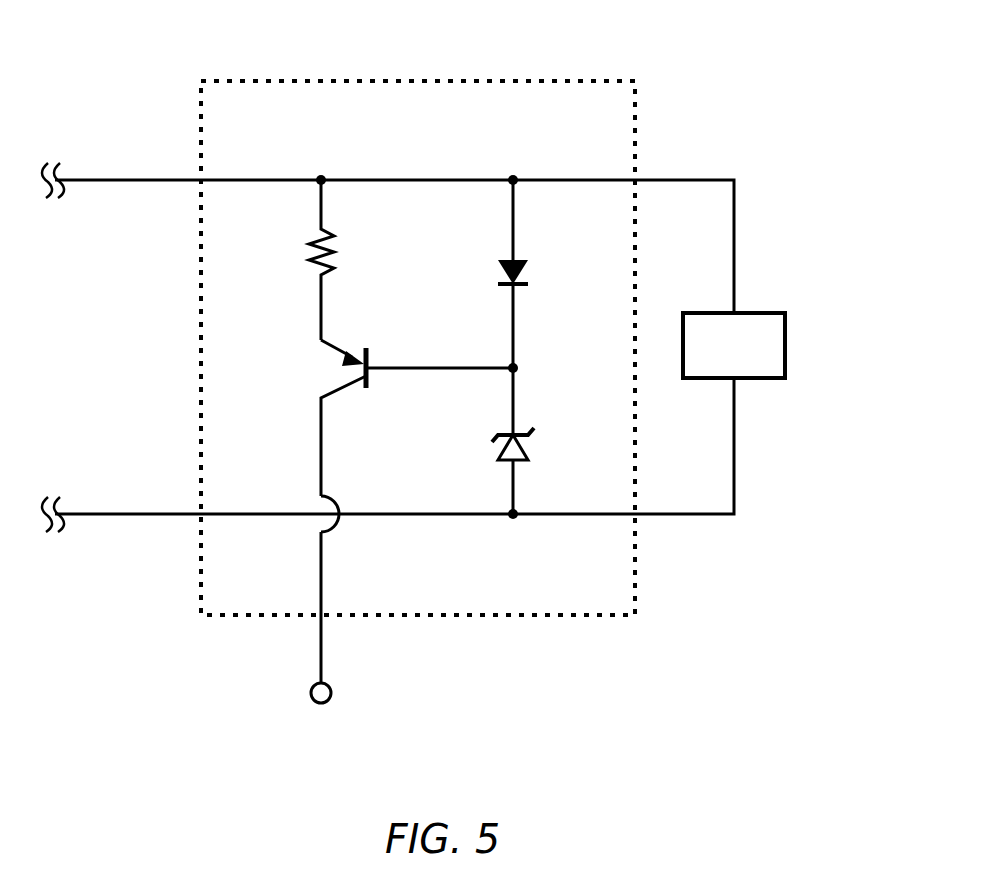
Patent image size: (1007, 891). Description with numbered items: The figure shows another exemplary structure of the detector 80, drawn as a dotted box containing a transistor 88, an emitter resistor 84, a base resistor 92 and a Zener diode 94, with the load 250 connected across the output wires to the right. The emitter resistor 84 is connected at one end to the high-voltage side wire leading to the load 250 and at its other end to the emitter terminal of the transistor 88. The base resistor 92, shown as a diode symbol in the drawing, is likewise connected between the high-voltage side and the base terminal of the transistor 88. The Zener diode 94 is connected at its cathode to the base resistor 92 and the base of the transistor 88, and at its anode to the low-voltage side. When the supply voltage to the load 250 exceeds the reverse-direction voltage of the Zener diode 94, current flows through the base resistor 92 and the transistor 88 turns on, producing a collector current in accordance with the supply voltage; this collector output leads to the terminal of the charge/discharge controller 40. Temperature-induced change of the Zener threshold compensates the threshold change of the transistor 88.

The detector 80 is at (418, 80).
The emitter resistor 84 is at (310, 258).
The transistor 88 is at (368, 342).
The base resistor 92 is at (530, 270).
The Zener diode 94 is at (530, 452).
The load 250 is at (785, 343).
The charge/discharge controller 40 is at (320, 641).